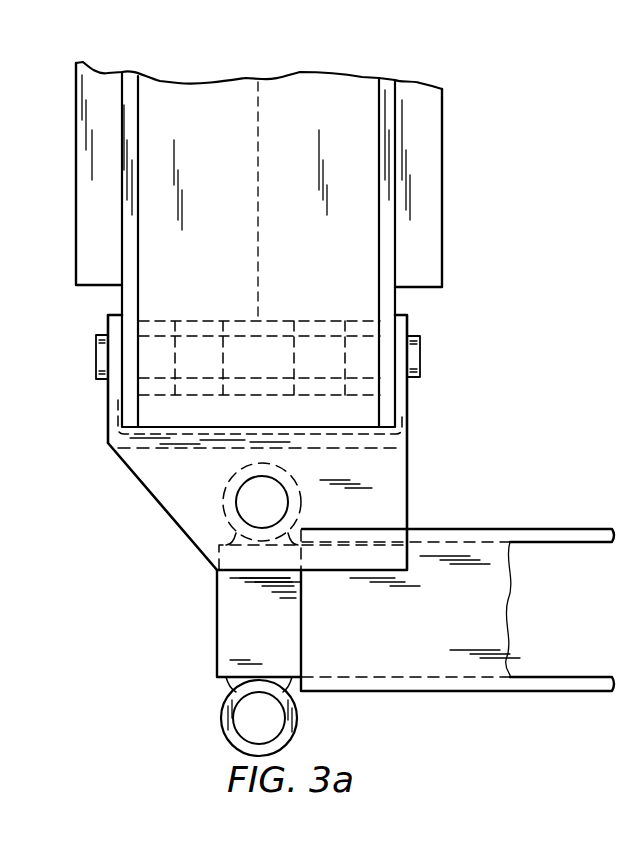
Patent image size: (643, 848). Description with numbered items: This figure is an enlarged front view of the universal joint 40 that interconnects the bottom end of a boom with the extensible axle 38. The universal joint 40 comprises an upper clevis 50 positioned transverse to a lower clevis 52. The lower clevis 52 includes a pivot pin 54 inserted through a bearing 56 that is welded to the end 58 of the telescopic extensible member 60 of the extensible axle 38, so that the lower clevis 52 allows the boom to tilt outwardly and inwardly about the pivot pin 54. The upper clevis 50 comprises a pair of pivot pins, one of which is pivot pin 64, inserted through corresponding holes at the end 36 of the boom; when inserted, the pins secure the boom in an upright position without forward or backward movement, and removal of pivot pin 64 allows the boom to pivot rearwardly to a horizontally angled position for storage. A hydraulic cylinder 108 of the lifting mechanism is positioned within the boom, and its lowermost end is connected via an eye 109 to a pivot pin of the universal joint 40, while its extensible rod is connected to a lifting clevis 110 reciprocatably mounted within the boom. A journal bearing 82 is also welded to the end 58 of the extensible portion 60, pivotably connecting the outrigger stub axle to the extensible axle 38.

The hydraulic cylinder 108 is at (296, 90).
The end of the boom 36 is at (130, 292).
The upper clevis 50 is at (98, 357).
The lifting clevis 110 is at (323, 355).
The eye 109 is at (203, 356).
The pivot pin 64 is at (414, 357).
The universal joint 40 is at (108, 428).
The bearing 56 is at (225, 497).
The pivot pin 54 is at (260, 506).
The lower clevis 52 is at (383, 512).
The extensible axle 38 is at (500, 530).
The end of the telescopic extensible member 58 is at (218, 604).
The telescopic extensible member 60 is at (248, 618).
The journal bearing 82 is at (222, 723).